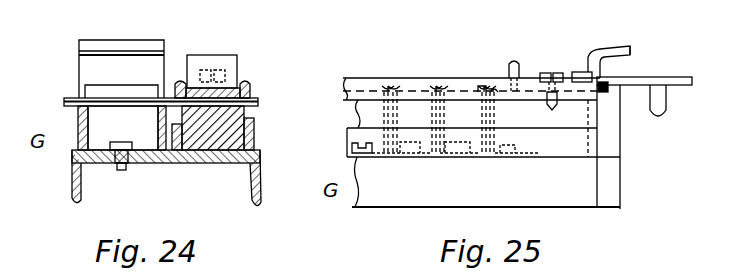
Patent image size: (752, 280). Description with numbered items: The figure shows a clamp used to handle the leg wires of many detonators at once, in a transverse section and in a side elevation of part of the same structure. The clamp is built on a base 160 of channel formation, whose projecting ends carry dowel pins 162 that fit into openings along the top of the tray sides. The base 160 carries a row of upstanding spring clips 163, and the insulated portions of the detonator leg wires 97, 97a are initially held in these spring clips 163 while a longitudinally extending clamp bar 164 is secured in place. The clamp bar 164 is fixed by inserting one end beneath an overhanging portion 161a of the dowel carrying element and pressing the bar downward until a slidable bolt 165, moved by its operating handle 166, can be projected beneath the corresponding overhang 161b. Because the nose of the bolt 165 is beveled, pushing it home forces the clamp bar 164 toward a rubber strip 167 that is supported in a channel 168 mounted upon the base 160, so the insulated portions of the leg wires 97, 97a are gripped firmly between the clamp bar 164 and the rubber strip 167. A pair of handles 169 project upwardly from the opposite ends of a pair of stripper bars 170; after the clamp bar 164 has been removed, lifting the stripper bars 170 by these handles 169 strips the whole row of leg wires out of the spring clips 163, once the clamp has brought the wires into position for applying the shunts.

In FIG. 24, the leg wire 97 is at (258, 101).
In FIG. 24, the leg wire 97a is at (246, 112).
In FIG. 24, the base 160 is at (212, 165).
In FIG. 25, the base 160 is at (483, 147).
In FIG. 25, the overhanging portion 161a is at (580, 64).
In FIG. 25, the overhang 161b is at (688, 85).
In FIG. 25, the dowel pin 162 is at (656, 118).
In FIG. 24, the spring clip 163 is at (130, 86).
In FIG. 25, the spring clip 163 is at (384, 84).
In FIG. 24, the clamp bar 164 is at (248, 80).
In FIG. 25, the clamp bar 164 is at (483, 85).
In FIG. 25, the slidable bolt 165 is at (609, 84).
In FIG. 25, the operating handle 166 is at (516, 70).
In FIG. 24, the rubber strip 167 is at (250, 140).
In FIG. 25, the rubber strip 167 is at (550, 110).
In FIG. 24, the channel 168 is at (258, 160).
In FIG. 24, the handle 169 is at (150, 45).
In FIG. 25, the handle 169 is at (631, 50).
In FIG. 24, the stripper bar 170 is at (88, 126).